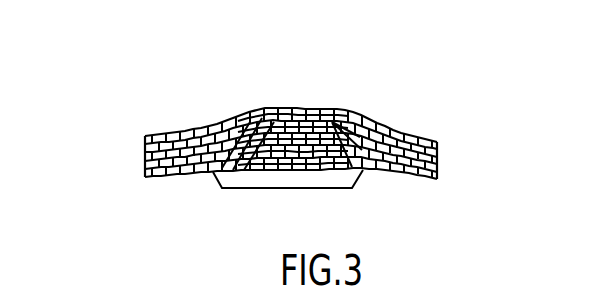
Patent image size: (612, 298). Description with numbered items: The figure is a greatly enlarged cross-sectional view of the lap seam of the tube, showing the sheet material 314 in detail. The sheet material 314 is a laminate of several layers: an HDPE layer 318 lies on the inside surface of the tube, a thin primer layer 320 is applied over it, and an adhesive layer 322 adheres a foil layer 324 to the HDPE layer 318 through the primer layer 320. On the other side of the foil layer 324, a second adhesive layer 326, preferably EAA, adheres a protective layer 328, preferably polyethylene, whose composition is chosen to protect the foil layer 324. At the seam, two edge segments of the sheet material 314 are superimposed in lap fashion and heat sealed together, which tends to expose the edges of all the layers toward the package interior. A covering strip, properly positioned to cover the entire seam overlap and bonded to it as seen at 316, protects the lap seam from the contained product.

The sheet material 314 is at (208, 125).
The covering strip position over seam 316 is at (270, 173).
The HDPE layer 318 is at (146, 177).
The primer layer 320 is at (148, 172).
The adhesive layer 322 is at (148, 164).
The foil layer 324 is at (148, 156).
The adhesive layer 326 is at (148, 149).
The protective layer 328 is at (148, 141).